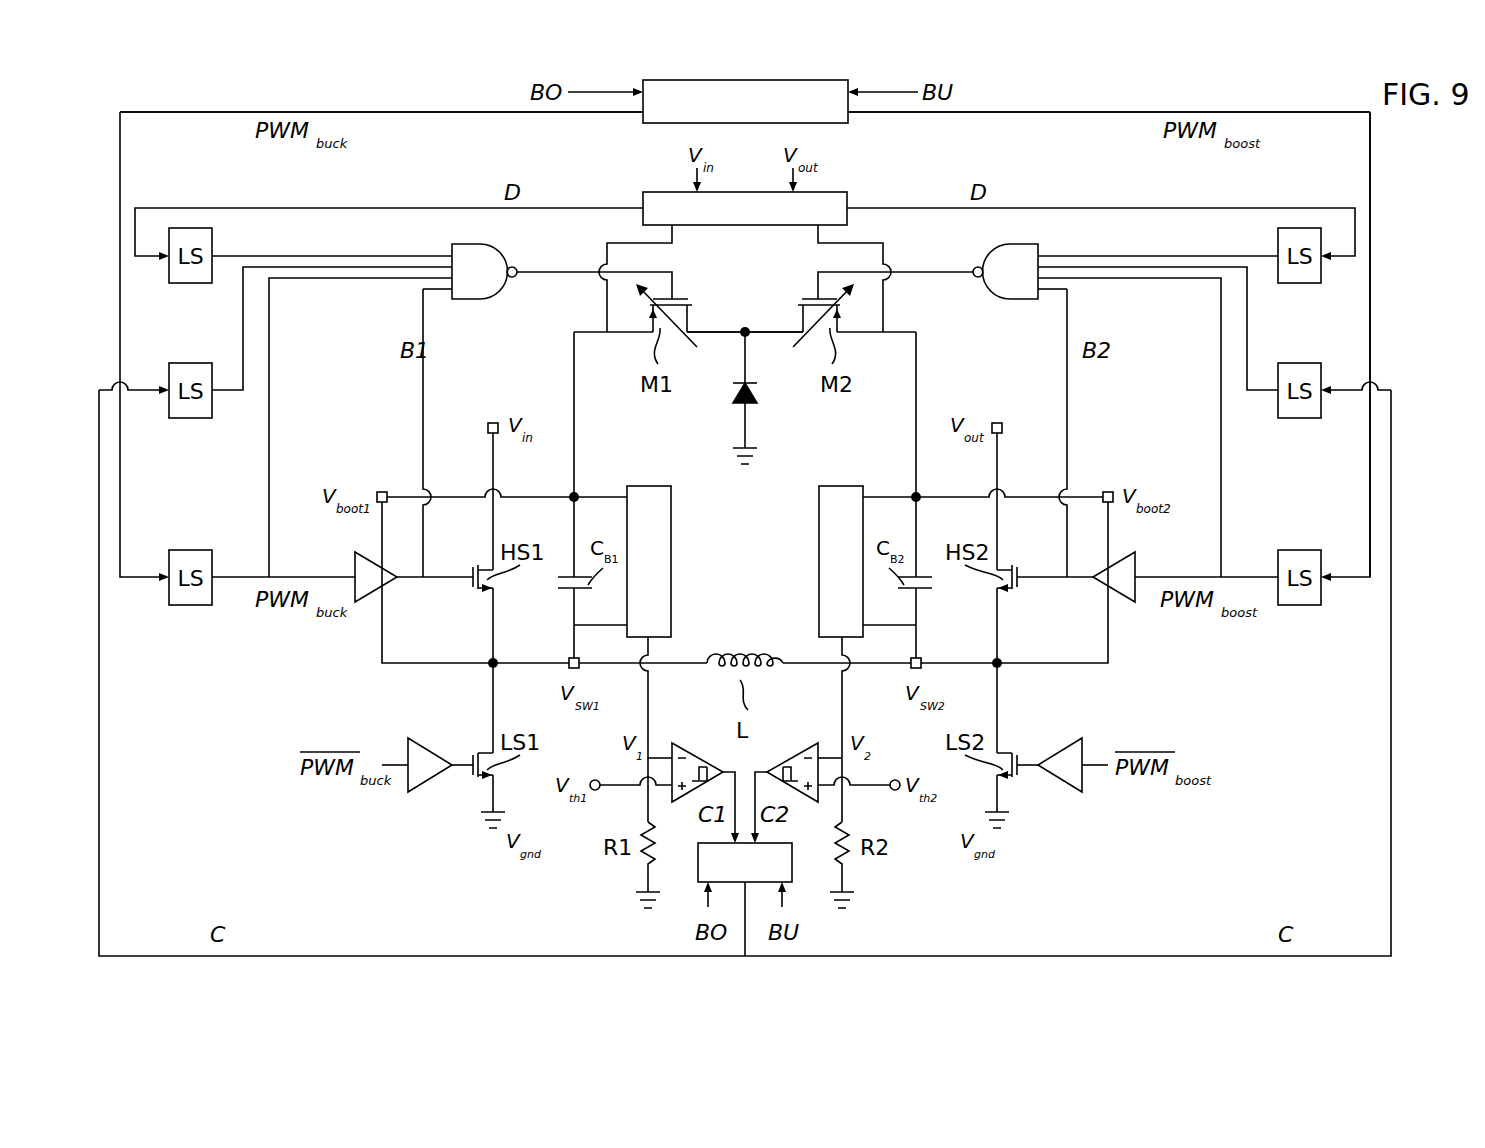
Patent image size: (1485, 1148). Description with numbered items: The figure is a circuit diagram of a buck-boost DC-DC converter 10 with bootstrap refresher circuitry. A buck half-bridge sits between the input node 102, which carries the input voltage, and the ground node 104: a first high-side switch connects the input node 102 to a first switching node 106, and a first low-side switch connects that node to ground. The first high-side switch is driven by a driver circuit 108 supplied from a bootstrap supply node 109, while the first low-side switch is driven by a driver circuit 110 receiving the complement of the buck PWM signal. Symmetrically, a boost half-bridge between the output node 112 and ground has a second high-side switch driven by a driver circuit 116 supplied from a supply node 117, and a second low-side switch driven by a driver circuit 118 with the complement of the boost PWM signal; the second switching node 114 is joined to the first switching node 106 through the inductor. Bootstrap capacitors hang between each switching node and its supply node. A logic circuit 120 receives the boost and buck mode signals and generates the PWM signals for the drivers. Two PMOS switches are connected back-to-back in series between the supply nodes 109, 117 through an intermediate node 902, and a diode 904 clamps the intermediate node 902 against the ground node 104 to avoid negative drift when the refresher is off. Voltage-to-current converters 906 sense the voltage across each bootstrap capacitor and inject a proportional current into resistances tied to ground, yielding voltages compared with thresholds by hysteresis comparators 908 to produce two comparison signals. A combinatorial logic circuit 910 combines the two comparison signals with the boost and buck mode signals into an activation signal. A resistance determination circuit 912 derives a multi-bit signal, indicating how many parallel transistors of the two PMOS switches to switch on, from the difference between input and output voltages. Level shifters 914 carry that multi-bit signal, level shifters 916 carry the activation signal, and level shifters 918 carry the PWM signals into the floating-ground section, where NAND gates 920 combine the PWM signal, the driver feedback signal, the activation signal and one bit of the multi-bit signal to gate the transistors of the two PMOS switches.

The buck-boost DC-DC converter 10 is at (1142, 84).
The logic circuit 120 is at (658, 123).
The resistance determination circuit 912 is at (842, 192).
The intermediate node 902 is at (750, 326).
The diode 904 is at (760, 392).
The reference (ground) node 104 is at (735, 468).
The NAND logic gate 920 is at (478, 299).
The level shifter circuit 914 is at (190, 283).
The level shifter circuit 916 is at (190, 418).
The level shifter circuit 918 is at (190, 605).
The input node 102 is at (492, 420).
The output node 112 is at (997, 420).
The supply node 109 is at (380, 490).
The supply node 117 is at (1110, 490).
The driver circuit 108 is at (355, 562).
The driver circuit 116 is at (1135, 562).
The first intermediate (switching) node 106 is at (572, 658).
The second intermediate (switching) node 114 is at (918, 658).
The voltage-to-current converter circuit 906 is at (673, 592).
The comparator circuit 908 is at (795, 718).
The combinatorial logic circuit 910 is at (822, 856).
The driver circuit 110 is at (438, 785).
The driver circuit 118 is at (1052, 785).